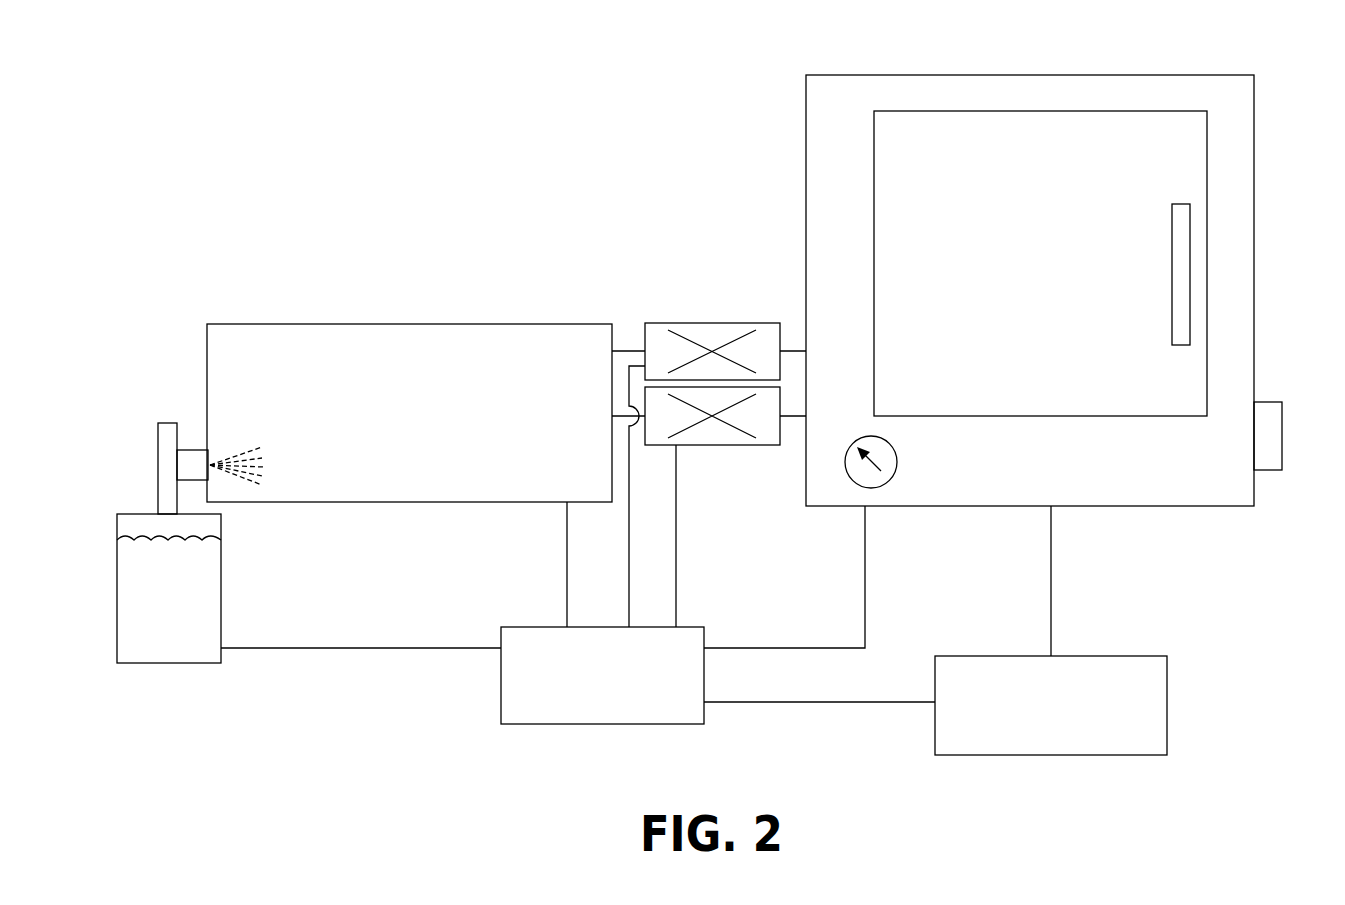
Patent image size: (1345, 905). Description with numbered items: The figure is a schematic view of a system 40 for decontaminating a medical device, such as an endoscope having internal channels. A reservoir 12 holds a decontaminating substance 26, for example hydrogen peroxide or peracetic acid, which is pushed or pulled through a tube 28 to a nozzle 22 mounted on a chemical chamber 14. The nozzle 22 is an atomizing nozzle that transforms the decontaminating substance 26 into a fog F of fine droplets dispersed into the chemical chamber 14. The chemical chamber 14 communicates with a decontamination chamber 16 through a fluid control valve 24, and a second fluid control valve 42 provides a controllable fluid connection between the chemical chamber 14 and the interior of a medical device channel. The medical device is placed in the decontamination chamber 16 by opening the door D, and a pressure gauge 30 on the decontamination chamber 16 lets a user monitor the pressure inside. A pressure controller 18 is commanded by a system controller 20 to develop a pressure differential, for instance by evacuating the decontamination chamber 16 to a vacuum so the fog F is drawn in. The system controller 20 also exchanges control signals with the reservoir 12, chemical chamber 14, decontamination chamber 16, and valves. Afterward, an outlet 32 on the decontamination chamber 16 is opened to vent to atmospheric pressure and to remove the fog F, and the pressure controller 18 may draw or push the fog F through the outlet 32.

The reservoir 12 is at (117, 605).
The chemical chamber 14 is at (309, 324).
The decontamination chamber 16 is at (1049, 259).
The pressure controller 18 is at (1167, 700).
The system controller 20 is at (586, 724).
The nozzle 22 is at (195, 448).
The fluid control valve 24 is at (718, 445).
The decontaminating substance 26 is at (208, 598).
The tube 28 is at (158, 483).
The pressure gauge 30 is at (897, 472).
The outlet 32 is at (1282, 420).
The system 40 is at (414, 150).
The second fluid control valve 42 is at (697, 323).
The fog F is at (247, 455).
The door D is at (1222, 170).